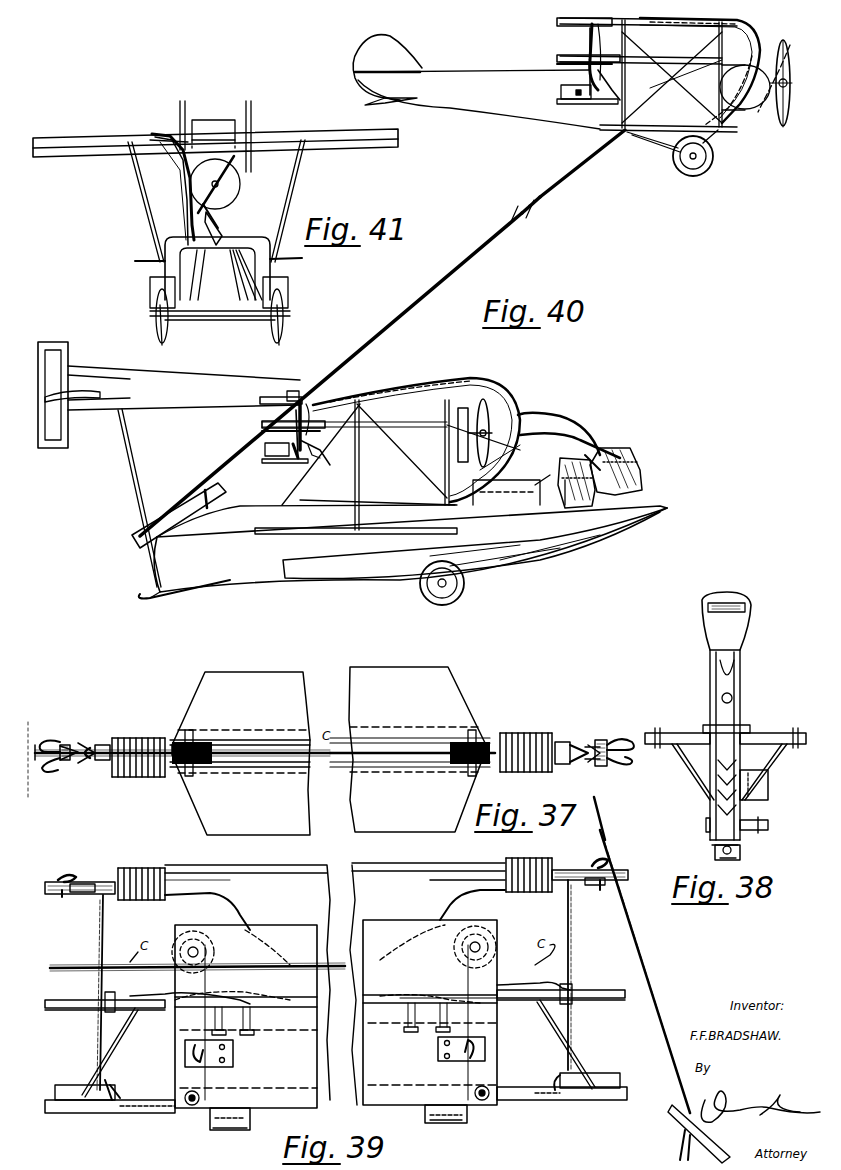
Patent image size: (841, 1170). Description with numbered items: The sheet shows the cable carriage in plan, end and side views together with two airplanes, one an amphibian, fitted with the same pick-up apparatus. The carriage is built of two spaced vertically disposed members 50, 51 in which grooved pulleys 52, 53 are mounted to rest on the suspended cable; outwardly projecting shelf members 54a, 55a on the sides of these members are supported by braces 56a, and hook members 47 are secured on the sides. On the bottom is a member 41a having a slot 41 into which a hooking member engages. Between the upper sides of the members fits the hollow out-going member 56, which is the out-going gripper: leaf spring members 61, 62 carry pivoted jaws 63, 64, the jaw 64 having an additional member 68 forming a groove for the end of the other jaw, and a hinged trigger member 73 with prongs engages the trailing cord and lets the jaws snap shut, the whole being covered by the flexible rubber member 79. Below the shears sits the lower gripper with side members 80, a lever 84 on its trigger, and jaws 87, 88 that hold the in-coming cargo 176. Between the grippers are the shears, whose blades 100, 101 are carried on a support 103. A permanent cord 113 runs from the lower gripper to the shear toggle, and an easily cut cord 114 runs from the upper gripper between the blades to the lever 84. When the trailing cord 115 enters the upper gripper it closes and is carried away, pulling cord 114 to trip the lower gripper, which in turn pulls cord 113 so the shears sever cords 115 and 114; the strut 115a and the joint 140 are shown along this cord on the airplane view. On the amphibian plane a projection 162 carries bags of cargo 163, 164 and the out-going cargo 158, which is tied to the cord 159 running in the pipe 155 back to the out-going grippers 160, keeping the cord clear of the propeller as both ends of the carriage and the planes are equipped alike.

In FIG. 38, the slot 41 is at (715, 852).
In FIG. 39, the slot 41 is at (208, 1118).
In FIG. 38, the bottom member 41a is at (738, 858).
In FIG. 39, the bottom member 41a is at (222, 1132).
In FIG. 38, the hook members 47 is at (768, 782).
In FIG. 39, the hook members 47 is at (183, 1058).
In FIG. 37, the vertically disposed member 50 is at (262, 742).
In FIG. 37, the vertically disposed member 51 is at (245, 767).
In FIG. 37, the grooved pulley 52 is at (176, 738).
In FIG. 39, the grooved pulley 52 is at (215, 938).
In FIG. 37, the grooved pulley 53 is at (498, 730).
In FIG. 38, the grooved pulley 53 is at (712, 683).
In FIG. 39, the grooved pulley 53 is at (463, 925).
In FIG. 37, the shelf member 54a is at (329, 709).
In FIG. 38, the shelf member 54a is at (676, 730).
In FIG. 37, the shelf member 55a is at (329, 792).
In FIG. 38, the shelf member 55a is at (770, 730).
In FIG. 39, the shelf member 55a is at (288, 1005).
In FIG. 38, the hollow member 56 is at (744, 600).
In FIG. 39, the hollow member 56 is at (248, 866).
In FIG. 38, the braces 56a is at (690, 762).
In FIG. 37, the leaf spring member 61 is at (100, 742).
In FIG. 37, the leaf spring member 62 is at (108, 768).
In FIG. 40, the jaw 63 is at (575, 42).
In FIG. 37, the jaw 63 is at (72, 770).
In FIG. 39, the jaw 63 is at (90, 894).
In FIG. 40, the jaw 64 is at (570, 20).
In FIG. 37, the jaw 64 is at (56, 740).
In FIG. 39, the jaw 64 is at (55, 882).
In FIG. 39, the additional member 68 is at (64, 894).
In FIG. 37, the trigger member 73 is at (45, 770).
In FIG. 39, the trigger member 73 is at (72, 876).
In FIG. 37, the flexible rubber member 79 is at (136, 740).
In FIG. 39, the flexible rubber member 79 is at (148, 868).
In FIG. 40, the side member 80 is at (572, 104).
In FIG. 39, the side member 80 is at (85, 1113).
In FIG. 39, the lever 84 is at (588, 1100).
In FIG. 40, the jaw 87 is at (556, 92).
In FIG. 39, the jaw 87 is at (75, 1085).
In FIG. 39, the jaw 88 is at (605, 1075).
In FIG. 40, the shear blade 100 is at (560, 50).
In FIG. 39, the shear blade 100 is at (68, 998).
In FIG. 40, the shear blade 101 is at (545, 65).
In FIG. 39, the shear blade 101 is at (48, 1010).
In FIG. 39, the support 103 is at (143, 992).
In FIG. 40, the cord 113 is at (463, 270).
In FIG. 39, the cord 113 is at (112, 1045).
In FIG. 40, the cord 114 is at (575, 78).
In FIG. 39, the cord 114 is at (95, 1033).
In FIG. 40, the trailing cord 115 is at (460, 262).
In FIG. 37, the trailing cord 115 is at (604, 818).
In FIG. 39, the trailing cord 115 is at (690, 988).
In FIG. 40, the strut 115a is at (570, 185).
In FIG. 40, the cable joint 140 is at (535, 205).
In FIG. 41, the pipe 155 is at (150, 138).
In FIG. 40, the pipe 155 is at (748, 28).
In FIG. 40, the out-going cargo 158 is at (560, 430).
In FIG. 41, the cord 159 is at (200, 192).
In FIG. 40, the cord 159 is at (412, 375).
In FIG. 40, the out-going grippers 160 is at (290, 390).
In FIG. 40, the projection 162 is at (632, 525).
In FIG. 41, the cargo bag 163 is at (224, 228).
In FIG. 40, the cargo bag 163 is at (635, 460).
In FIG. 40, the cargo bag 164 is at (590, 445).
In FIG. 40, the in-coming cargo 176 is at (145, 515).
In FIG. 39, the in-coming cargo 176 is at (680, 1133).